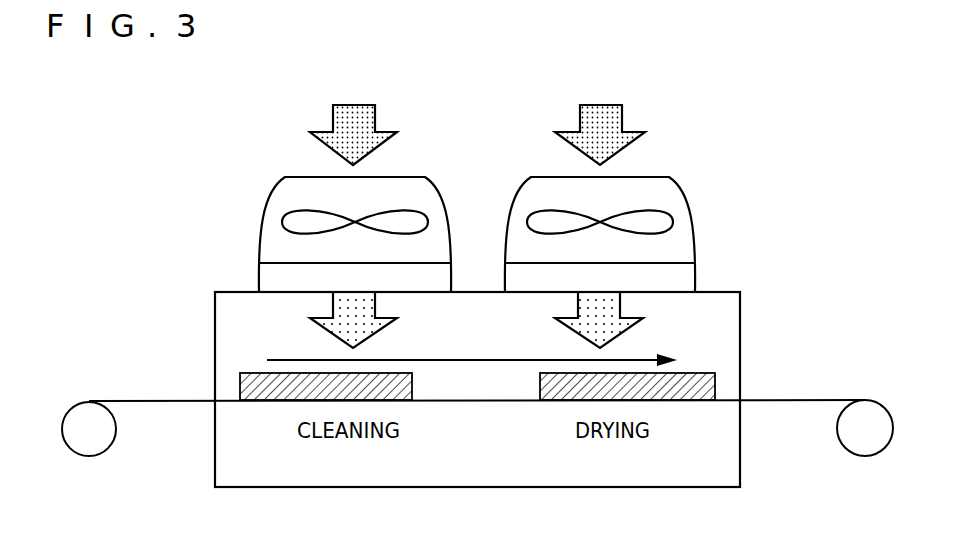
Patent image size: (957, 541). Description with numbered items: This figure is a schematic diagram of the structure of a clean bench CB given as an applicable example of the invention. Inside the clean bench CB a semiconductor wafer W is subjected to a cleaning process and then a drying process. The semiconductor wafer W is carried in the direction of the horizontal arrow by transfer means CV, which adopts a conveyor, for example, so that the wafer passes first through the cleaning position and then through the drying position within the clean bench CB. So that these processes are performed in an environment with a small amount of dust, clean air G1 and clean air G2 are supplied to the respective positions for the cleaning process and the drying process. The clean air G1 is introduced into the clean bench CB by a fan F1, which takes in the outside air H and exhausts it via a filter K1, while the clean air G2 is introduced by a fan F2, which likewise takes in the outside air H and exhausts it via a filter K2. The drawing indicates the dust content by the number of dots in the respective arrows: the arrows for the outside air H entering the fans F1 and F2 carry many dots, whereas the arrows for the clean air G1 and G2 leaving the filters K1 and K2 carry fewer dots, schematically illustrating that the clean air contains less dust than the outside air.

The outside air H is at (587, 122).
The fan F1 is at (297, 223).
The fan F2 is at (657, 222).
The filter K1 is at (280, 280).
The filter K2 is at (675, 280).
The clean air G1 is at (337, 329).
The clean air G2 is at (580, 329).
The semiconductor wafer W is at (243, 385).
The clean bench CB is at (747, 307).
The transfer means CV is at (858, 460).